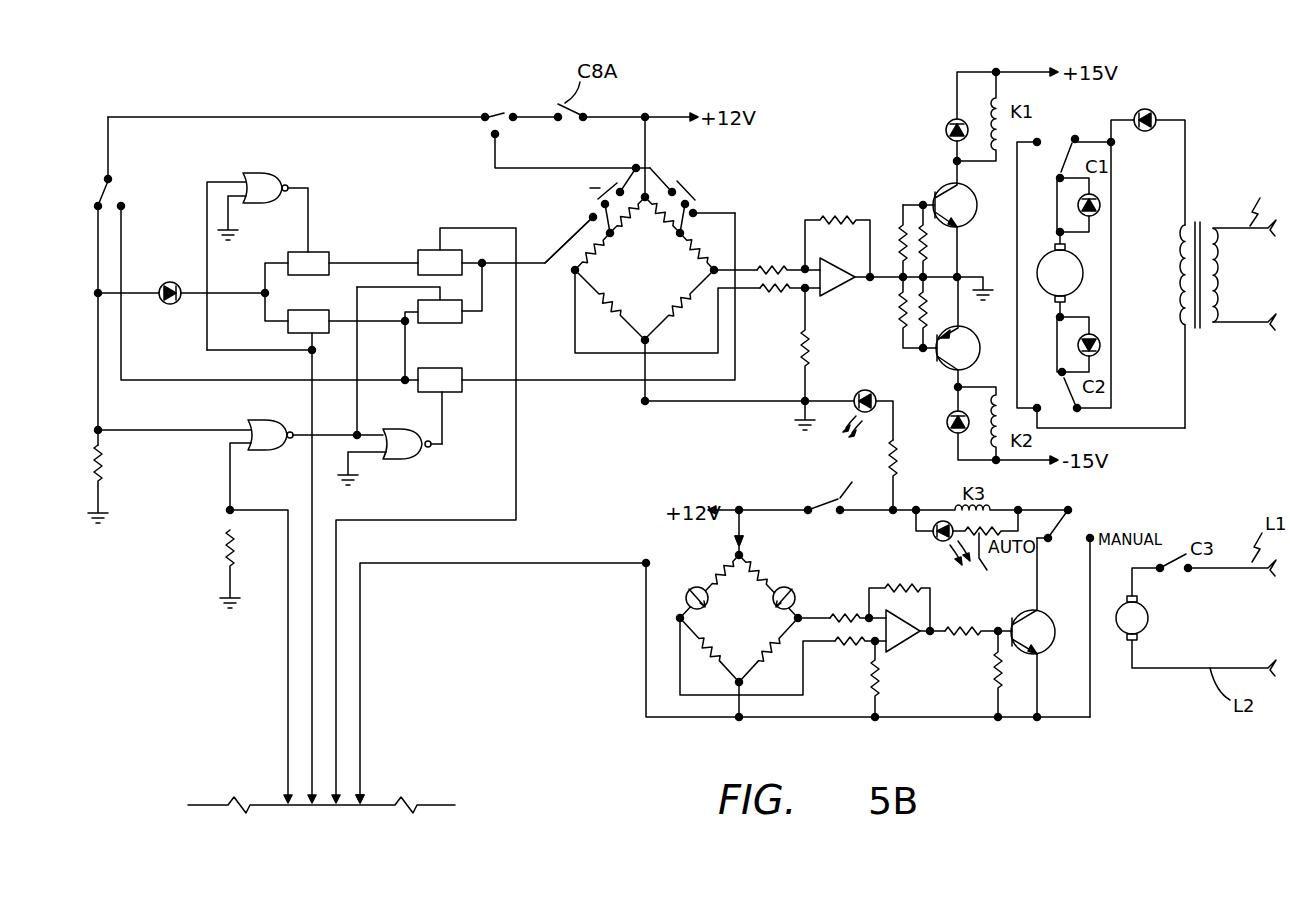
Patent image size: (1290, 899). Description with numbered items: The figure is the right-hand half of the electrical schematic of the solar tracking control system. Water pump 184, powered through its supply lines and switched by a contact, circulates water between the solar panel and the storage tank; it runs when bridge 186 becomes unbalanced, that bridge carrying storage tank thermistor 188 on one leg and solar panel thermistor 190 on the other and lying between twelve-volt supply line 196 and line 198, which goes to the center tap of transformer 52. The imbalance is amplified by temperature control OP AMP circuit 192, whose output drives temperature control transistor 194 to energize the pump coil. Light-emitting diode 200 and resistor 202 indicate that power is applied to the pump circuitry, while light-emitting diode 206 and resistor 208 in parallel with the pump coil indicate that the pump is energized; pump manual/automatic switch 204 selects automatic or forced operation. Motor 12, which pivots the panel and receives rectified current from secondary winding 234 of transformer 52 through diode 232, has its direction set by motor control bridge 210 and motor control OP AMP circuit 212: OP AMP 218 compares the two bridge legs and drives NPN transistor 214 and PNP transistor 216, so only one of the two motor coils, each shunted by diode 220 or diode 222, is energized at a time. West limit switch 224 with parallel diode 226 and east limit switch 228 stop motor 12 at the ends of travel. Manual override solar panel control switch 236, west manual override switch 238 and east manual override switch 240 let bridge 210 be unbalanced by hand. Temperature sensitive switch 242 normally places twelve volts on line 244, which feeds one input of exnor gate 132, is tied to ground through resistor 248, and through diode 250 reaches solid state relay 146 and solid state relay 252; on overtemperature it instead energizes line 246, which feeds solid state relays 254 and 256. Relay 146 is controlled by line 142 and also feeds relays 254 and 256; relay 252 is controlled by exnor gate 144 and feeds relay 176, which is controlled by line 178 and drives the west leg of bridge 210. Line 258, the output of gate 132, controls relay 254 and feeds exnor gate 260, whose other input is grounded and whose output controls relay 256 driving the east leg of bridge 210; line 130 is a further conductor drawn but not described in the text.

The motor 12 is at (1082, 265).
The transformer 52 is at (1200, 220).
The signal line 130 is at (288, 735).
The exnor gate 132 is at (262, 452).
The line 142 is at (312, 654).
The exnor gate 144 is at (253, 172).
The solid state relay 146 is at (318, 308).
The relay 176 is at (428, 250).
The line 178 is at (336, 556).
The water pump 184 is at (1150, 615).
The bridge 186 is at (709, 569).
The storage tank thermistor 188 is at (708, 606).
The solar panel thermistor 190 is at (786, 586).
The temperature control OP AMP circuit 192 is at (875, 574).
The temperature control transistor 194 is at (1052, 620).
The 12-volt supply line 196 is at (775, 508).
The line 198 is at (362, 752).
The light-emitting diode 200 is at (862, 390).
The resistor 202 is at (898, 465).
The pump manual/automatic switch 204 is at (1075, 513).
The light-emitting diode 206 is at (940, 542).
The resistor 208 is at (986, 568).
The motor control bridge 210 is at (728, 168).
The motor control OP AMP circuit 212 is at (835, 172).
The NPN transistor 214 is at (935, 190).
The PNP transistor 216 is at (978, 342).
The OP AMP 218 is at (850, 292).
The diode 220 is at (948, 120).
The diode 222 is at (950, 414).
The west limit switch 224 is at (1057, 213).
The diode 226 is at (1100, 203).
The east limit switch 228 is at (1054, 360).
The diode 232 is at (1152, 110).
The secondary winding 234 is at (1183, 295).
The manual override solar panel control switch 236 is at (488, 110).
The west manual override switch 238 is at (592, 200).
The east manual override switch 240 is at (690, 195).
The temperature sensitive switch 242 is at (100, 192).
The line 244 is at (98, 258).
The line 246 is at (121, 250).
The resistor 248 is at (108, 470).
The diode 250 is at (168, 305).
The solid state relay 252 is at (318, 250).
The solid state relay 254 is at (446, 324).
The solid state relay 256 is at (450, 394).
The line 258 is at (357, 428).
The exnor gate 260 is at (412, 458).